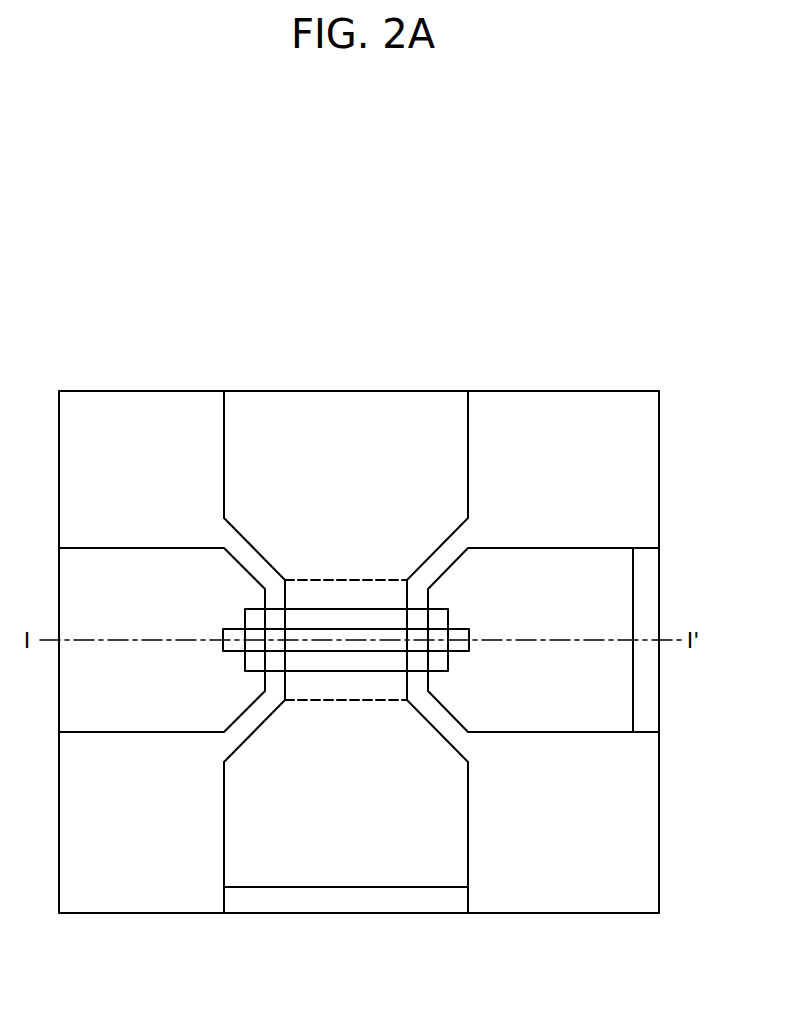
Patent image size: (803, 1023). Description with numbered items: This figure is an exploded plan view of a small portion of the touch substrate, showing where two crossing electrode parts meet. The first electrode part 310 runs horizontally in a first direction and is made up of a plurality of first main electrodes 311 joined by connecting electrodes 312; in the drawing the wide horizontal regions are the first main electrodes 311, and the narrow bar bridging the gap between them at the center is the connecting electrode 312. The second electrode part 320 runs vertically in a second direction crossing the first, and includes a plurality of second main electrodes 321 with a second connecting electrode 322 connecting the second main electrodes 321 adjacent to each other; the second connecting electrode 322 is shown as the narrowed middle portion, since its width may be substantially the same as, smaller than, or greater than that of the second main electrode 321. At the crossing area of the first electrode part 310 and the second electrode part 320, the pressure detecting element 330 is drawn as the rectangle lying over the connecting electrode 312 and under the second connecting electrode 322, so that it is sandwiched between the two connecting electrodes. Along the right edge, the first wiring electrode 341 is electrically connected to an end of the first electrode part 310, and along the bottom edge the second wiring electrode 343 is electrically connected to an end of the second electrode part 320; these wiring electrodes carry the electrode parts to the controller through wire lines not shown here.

The first electrode part 310 is at (97, 324).
The first main electrode 311 is at (115, 557).
The connecting electrode 312 is at (223, 634).
The second electrode part 320 is at (363, 956).
The second main electrode 321 is at (438, 822).
The second connecting electrode 322 is at (391, 690).
The pressure detecting element 330 is at (434, 608).
The first wiring electrode 341 is at (650, 568).
The second wiring electrode 343 is at (241, 905).